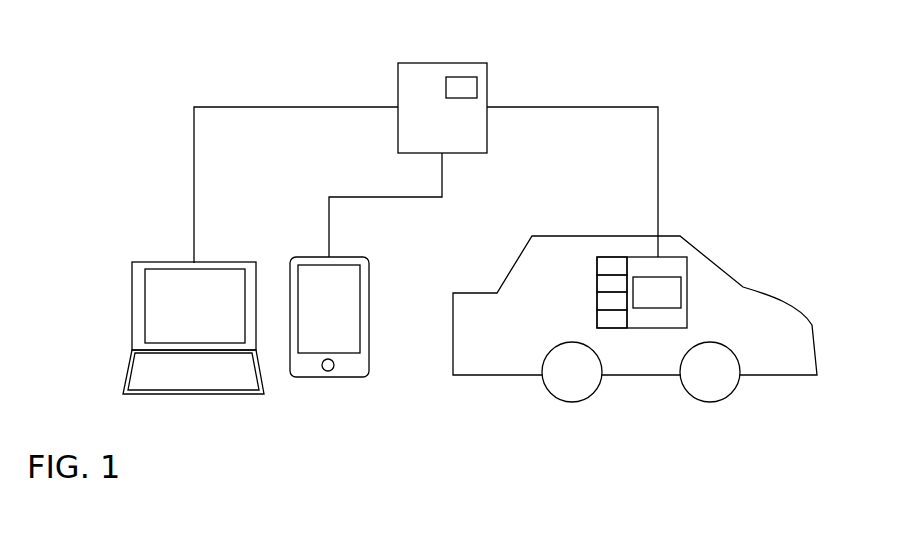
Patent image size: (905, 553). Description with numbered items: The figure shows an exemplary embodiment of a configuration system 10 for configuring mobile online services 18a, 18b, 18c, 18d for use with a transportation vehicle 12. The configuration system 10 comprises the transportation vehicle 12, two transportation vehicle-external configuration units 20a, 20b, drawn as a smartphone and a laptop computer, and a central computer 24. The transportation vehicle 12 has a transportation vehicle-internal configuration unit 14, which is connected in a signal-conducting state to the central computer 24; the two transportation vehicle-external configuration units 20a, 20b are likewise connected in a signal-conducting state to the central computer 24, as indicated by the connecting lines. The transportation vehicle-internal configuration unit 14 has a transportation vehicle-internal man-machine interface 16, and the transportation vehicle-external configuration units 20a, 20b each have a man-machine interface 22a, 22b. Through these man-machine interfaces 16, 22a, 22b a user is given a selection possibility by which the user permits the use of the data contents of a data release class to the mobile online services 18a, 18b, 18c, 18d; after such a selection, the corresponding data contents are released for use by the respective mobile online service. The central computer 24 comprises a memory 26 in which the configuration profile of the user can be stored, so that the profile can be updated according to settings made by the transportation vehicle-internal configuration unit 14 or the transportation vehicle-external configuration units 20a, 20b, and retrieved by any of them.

The configuration system 10 is at (692, 100).
The transportation vehicle 12 is at (723, 270).
The transportation vehicle-internal configuration unit 14 is at (655, 328).
The transportation vehicle-internal man-machine interface 16 is at (648, 285).
The mobile online service 18a is at (605, 262).
The mobile online service 18b is at (605, 282).
The mobile online service 18c is at (605, 303).
The mobile online service 18d is at (605, 323).
The transportation vehicle-external configuration unit 20a is at (367, 298).
The transportation vehicle-external configuration unit 20b is at (210, 263).
The man-machine interface 22a is at (335, 367).
The man-machine interface 22b is at (155, 333).
The central computer 24 is at (445, 63).
The memory 26 is at (465, 87).